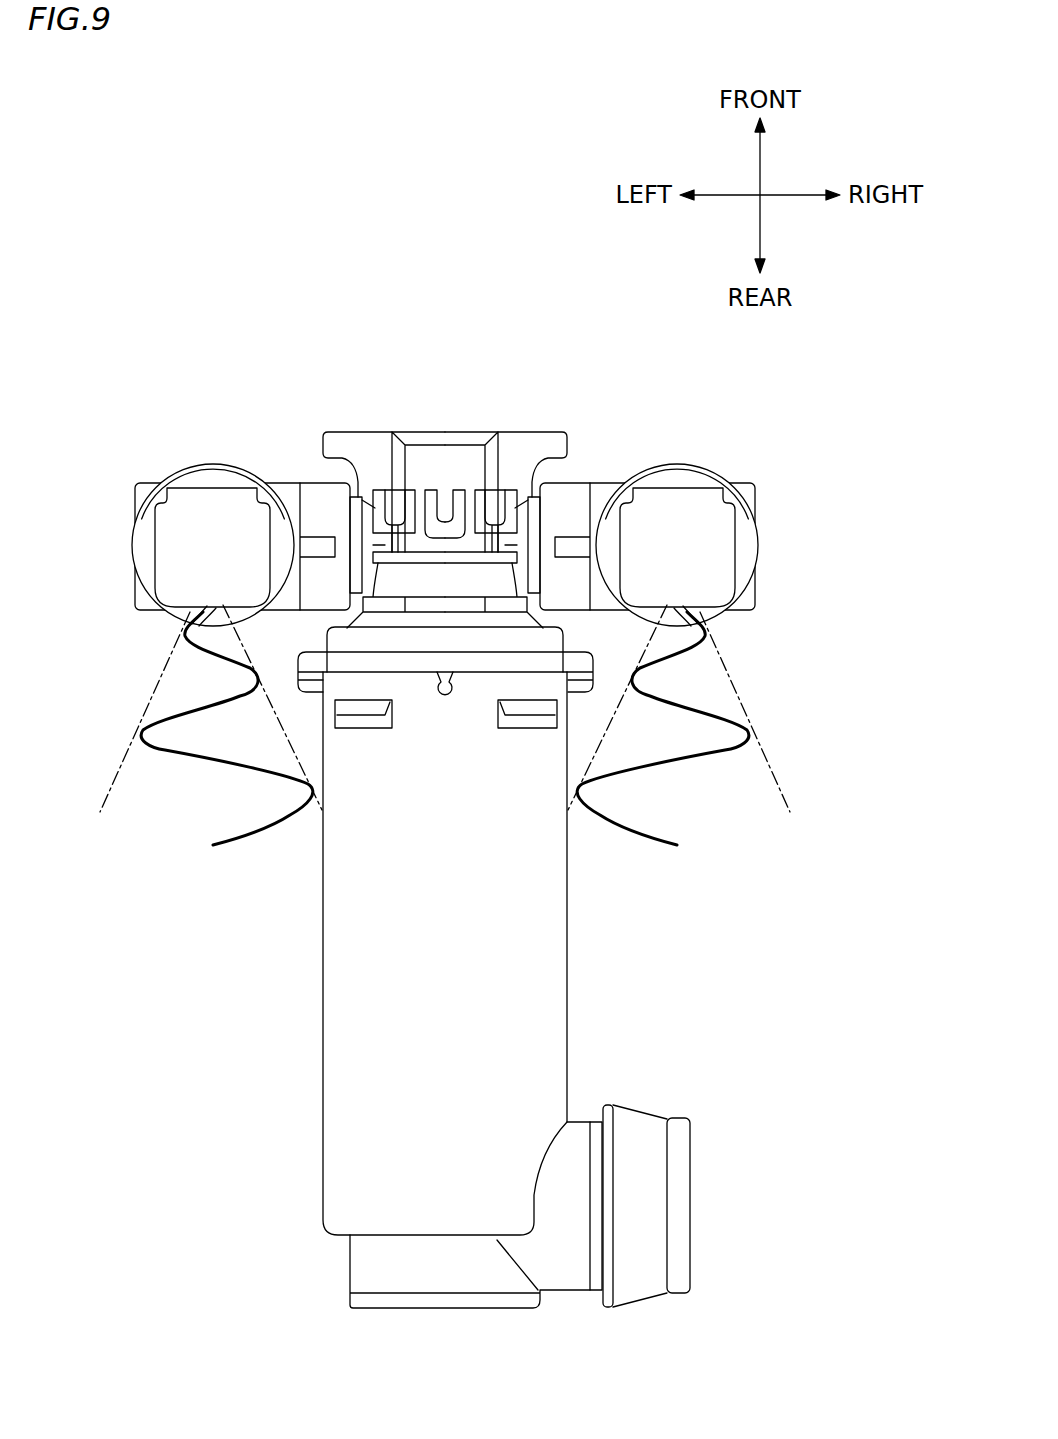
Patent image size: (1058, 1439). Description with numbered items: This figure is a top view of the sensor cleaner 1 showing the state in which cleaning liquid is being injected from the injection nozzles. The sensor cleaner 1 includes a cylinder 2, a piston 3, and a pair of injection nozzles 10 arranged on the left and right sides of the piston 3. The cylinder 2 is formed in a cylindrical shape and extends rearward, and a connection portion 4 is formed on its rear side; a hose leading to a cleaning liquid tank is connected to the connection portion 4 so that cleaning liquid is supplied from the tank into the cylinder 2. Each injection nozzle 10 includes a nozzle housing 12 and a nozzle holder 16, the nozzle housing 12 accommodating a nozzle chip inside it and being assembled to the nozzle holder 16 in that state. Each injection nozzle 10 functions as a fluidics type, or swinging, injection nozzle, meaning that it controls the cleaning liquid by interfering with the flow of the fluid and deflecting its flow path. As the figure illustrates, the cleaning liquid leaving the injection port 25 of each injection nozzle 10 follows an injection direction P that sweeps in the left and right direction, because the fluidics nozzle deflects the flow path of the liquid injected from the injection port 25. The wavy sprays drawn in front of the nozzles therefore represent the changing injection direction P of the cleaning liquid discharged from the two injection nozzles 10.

The sensor cleaner 1 is at (213, 328).
The cylinder 2 is at (535, 968).
The piston 3 is at (527, 443).
The connection portion 4 is at (690, 1190).
The injection nozzle 10 is at (188, 463).
The nozzle housing 12 is at (185, 507).
The nozzle holder 16 is at (283, 481).
The injection port 25 is at (190, 620).
The injection direction P is at (255, 828).